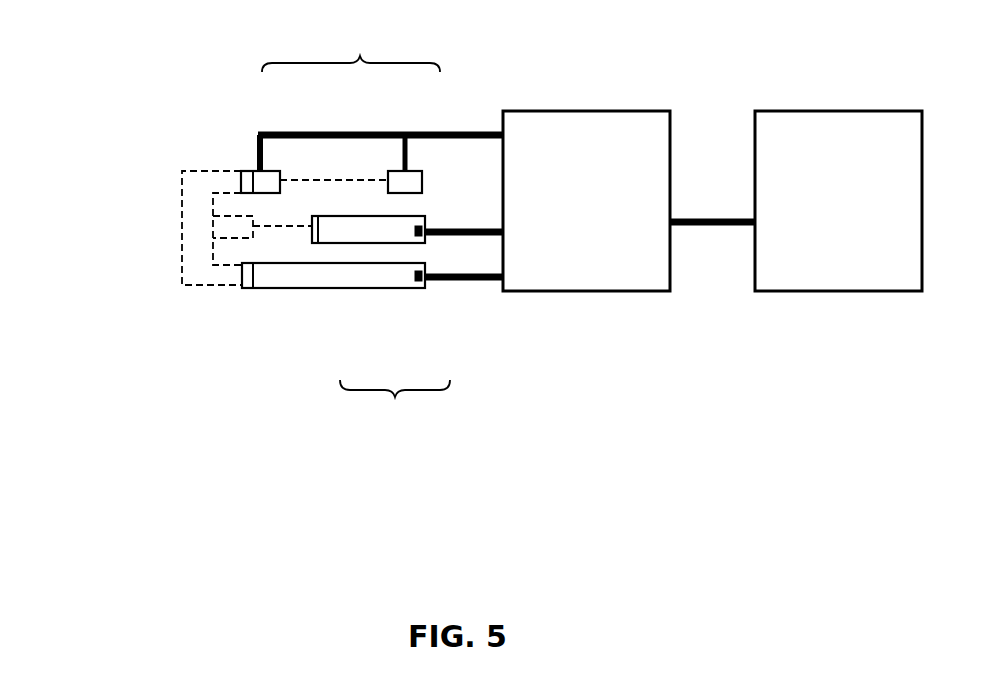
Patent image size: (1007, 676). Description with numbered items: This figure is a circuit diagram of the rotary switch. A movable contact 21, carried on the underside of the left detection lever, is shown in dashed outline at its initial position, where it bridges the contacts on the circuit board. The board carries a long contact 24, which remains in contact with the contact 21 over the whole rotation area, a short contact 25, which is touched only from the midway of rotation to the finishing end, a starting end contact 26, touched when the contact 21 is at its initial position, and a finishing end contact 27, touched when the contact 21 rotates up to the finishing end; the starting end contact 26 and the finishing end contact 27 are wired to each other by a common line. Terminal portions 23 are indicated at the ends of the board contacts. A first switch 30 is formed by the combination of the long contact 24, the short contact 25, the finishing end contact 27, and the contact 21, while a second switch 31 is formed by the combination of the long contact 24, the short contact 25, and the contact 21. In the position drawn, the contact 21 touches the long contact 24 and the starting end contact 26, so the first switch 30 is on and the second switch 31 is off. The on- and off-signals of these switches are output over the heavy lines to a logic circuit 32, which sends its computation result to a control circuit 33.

The contact 21 is at (178, 243).
The terminal portions 23 is at (230, 170).
The long contact 24 is at (325, 272).
The short contact 25 is at (400, 235).
The starting end contact 26 is at (278, 172).
The finishing end contact 27 is at (394, 178).
The first switch 30 is at (351, 46).
The second switch 31 is at (395, 410).
The logic circuit 32 is at (597, 111).
The control circuit 33 is at (838, 111).